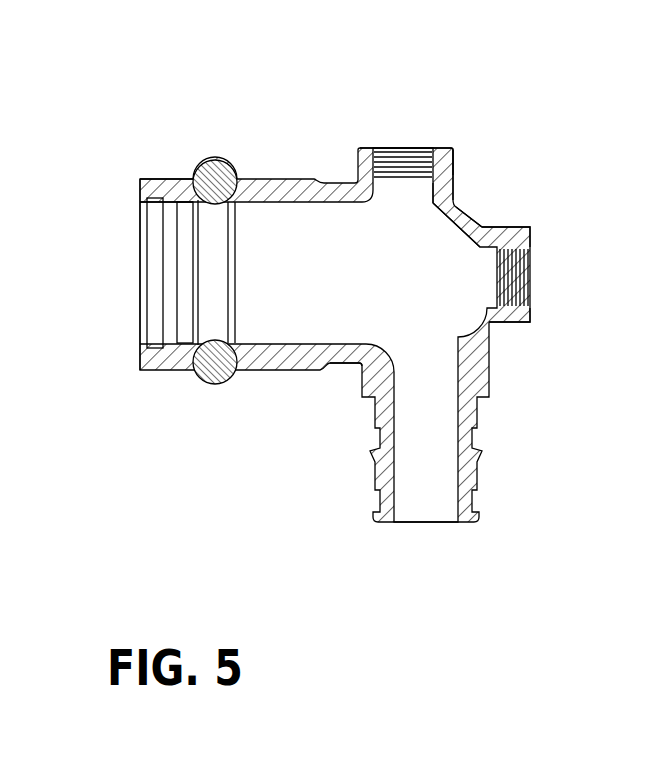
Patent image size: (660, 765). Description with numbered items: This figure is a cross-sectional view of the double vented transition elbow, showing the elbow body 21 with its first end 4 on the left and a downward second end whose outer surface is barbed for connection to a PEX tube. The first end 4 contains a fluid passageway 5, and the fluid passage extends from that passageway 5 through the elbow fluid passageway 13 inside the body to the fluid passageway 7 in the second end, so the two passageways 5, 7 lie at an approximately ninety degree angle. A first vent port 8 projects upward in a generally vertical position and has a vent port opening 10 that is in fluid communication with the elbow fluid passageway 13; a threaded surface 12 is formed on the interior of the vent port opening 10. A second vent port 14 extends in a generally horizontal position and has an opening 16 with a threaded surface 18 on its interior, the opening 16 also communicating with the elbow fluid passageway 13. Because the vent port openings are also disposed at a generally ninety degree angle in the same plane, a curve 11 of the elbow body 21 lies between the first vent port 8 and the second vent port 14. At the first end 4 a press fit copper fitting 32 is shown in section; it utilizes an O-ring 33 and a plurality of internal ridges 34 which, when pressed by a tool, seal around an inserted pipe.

The first end 4 is at (280, 177).
The fluid passageway 5 is at (138, 265).
The fluid passageway 7 is at (422, 523).
The first vent port 8 is at (453, 167).
The vent port opening 10 is at (395, 148).
The curve 11 is at (477, 217).
The threaded surface 12 is at (453, 150).
The elbow fluid passageway 13 is at (403, 285).
The second vent port 14 is at (528, 235).
The opening 16 is at (528, 285).
The threaded surface 18 is at (520, 322).
The elbow body 21 is at (361, 366).
The press fit copper fitting 32 is at (207, 160).
The O-ring 33 is at (207, 383).
The internal ridges 34 is at (167, 188).